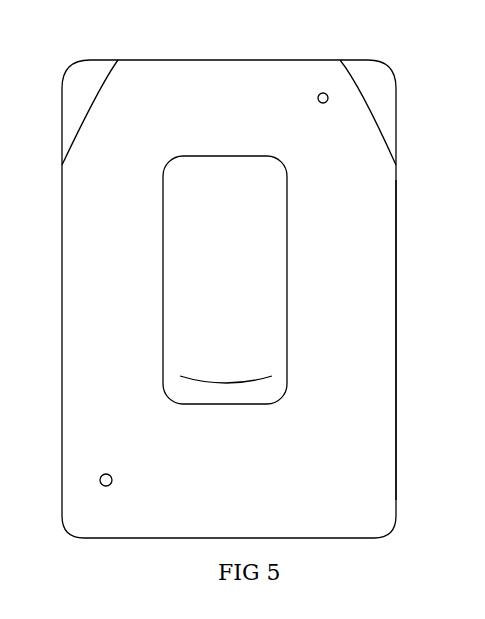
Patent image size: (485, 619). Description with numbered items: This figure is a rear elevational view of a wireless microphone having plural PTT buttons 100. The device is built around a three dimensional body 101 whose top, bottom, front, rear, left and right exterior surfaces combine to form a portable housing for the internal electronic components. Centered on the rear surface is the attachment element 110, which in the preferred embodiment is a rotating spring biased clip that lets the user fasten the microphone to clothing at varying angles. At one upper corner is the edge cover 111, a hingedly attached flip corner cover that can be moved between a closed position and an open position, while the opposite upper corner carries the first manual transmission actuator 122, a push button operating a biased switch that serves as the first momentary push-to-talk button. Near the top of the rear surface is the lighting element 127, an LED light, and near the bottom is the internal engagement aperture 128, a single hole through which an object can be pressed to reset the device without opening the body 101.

The wireless microphone having plural PTT buttons 100 is at (237, 48).
The three dimensional body 101 is at (396, 232).
The attachment element 110 is at (250, 239).
The edge cover 111 is at (97, 70).
The first manual transmission actuator 122 is at (375, 78).
The lighting element 127 is at (318, 98).
The internal engagement aperture 128 is at (113, 477).